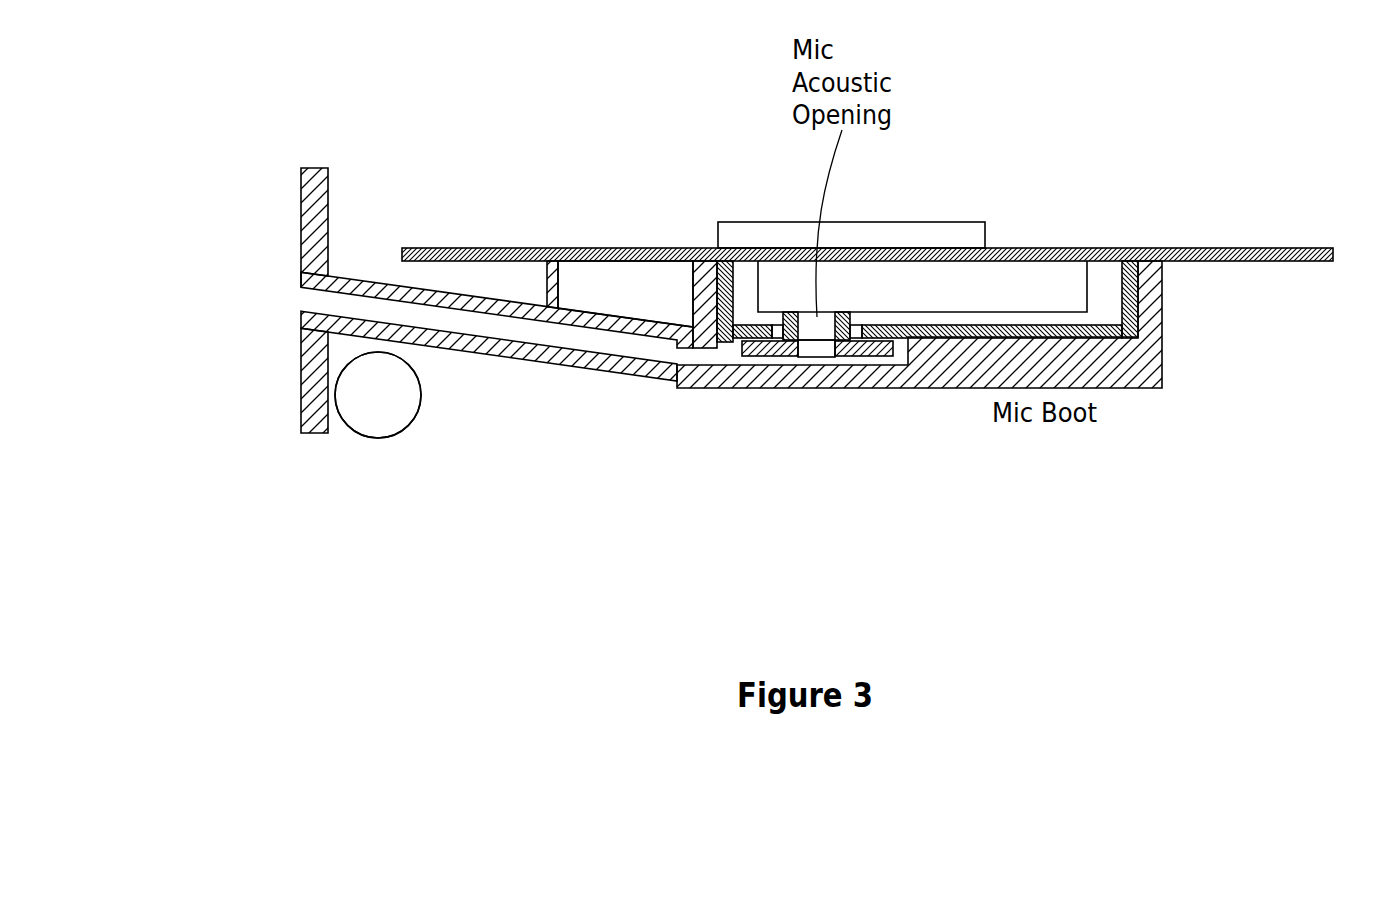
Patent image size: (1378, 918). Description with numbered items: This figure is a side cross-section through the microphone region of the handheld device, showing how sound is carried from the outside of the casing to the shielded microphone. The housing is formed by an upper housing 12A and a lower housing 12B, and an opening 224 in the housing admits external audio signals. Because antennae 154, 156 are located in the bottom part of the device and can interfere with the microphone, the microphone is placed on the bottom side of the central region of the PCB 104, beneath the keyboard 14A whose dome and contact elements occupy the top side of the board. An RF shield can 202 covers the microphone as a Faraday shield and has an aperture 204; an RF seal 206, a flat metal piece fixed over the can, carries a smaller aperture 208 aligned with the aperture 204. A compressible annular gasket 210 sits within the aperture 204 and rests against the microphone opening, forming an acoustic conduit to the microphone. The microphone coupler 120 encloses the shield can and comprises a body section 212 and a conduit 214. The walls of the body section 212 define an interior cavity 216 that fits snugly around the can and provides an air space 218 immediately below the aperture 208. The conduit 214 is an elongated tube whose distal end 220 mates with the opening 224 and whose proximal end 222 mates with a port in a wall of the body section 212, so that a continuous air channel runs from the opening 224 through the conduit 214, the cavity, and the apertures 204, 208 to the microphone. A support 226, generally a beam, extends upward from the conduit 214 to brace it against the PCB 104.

The upper housing 12A is at (312, 170).
The lower housing 12B is at (313, 425).
The keyboard 14A is at (898, 222).
The PCB 104 is at (1227, 247).
The microphone coupler 120 is at (940, 390).
The antenna 154 is at (378, 395).
The antenna 156 is at (378, 395).
The RF shield can 202 is at (1120, 280).
The aperture 204 is at (852, 345).
The RF seal 206 is at (745, 356).
The aperture 208 is at (818, 350).
The gasket 210 is at (843, 312).
The body section 212 is at (1150, 362).
The conduit 214 is at (438, 342).
The interior cavity 216 is at (1147, 293).
The air space 218 is at (868, 360).
The distal end 220 is at (300, 285).
The proximal end 222 is at (660, 328).
The opening 224 is at (298, 300).
The support 226 is at (546, 275).